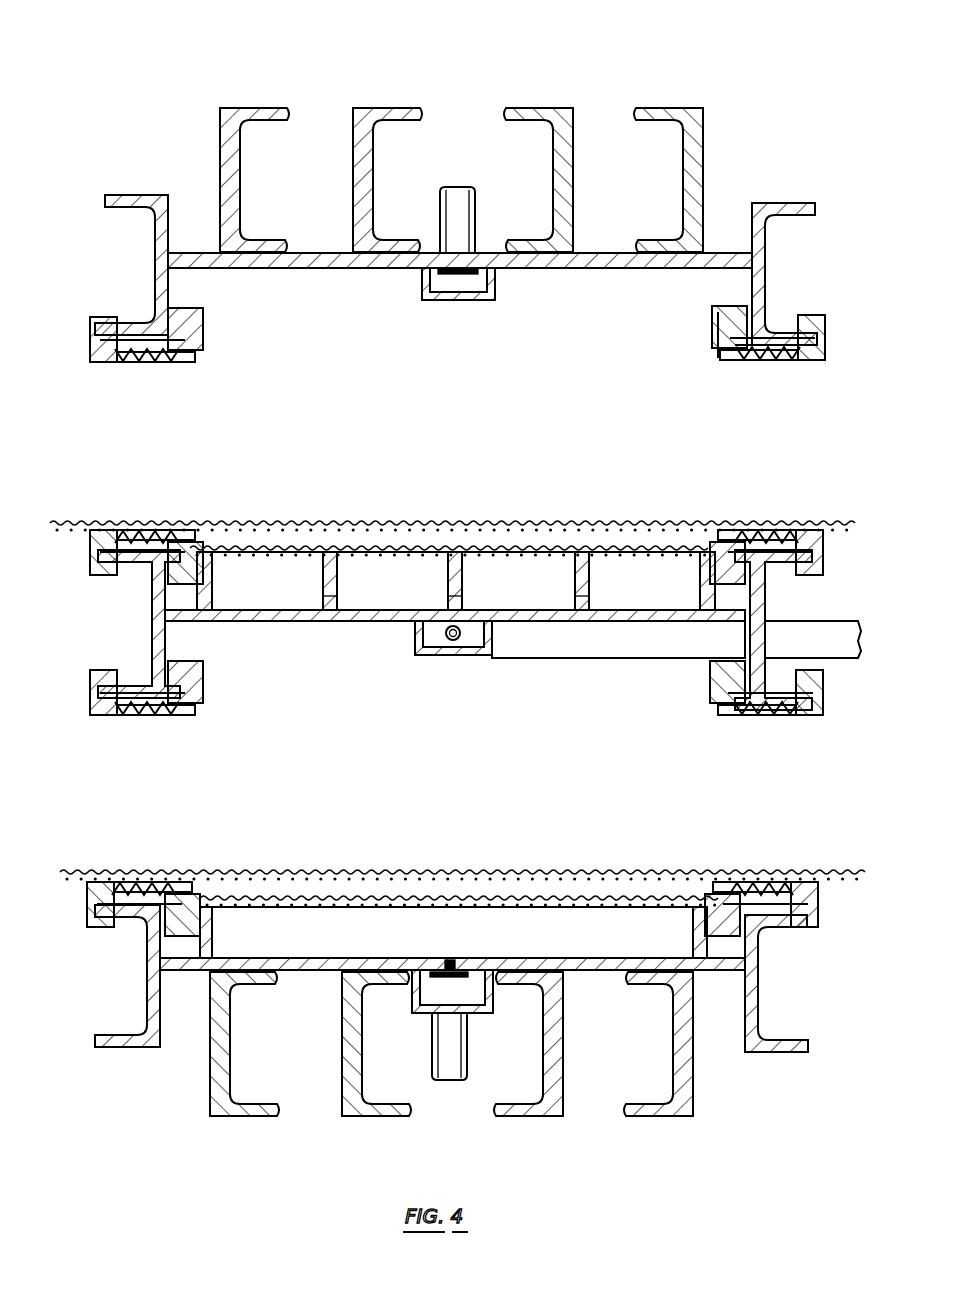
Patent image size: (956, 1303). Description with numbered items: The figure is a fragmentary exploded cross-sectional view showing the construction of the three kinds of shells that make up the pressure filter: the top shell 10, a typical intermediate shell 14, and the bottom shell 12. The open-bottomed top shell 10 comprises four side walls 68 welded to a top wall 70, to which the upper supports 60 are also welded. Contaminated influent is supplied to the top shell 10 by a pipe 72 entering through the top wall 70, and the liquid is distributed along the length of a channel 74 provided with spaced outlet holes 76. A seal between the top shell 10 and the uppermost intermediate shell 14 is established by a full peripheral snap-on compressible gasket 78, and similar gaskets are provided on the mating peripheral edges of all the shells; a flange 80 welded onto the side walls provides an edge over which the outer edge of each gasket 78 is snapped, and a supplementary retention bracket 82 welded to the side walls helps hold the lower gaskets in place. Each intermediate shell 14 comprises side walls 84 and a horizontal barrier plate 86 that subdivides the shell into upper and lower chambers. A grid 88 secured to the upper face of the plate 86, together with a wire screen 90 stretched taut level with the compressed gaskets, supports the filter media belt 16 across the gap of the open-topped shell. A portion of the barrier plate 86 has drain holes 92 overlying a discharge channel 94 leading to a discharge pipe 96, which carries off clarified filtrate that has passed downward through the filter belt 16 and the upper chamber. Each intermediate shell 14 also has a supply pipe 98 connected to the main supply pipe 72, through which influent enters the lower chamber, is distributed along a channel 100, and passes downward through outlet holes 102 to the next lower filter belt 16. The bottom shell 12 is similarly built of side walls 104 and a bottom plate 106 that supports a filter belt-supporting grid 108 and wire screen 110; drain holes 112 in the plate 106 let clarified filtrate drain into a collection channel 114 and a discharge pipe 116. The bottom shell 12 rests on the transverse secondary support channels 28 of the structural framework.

The top shell 10 is at (124, 190).
The upper supports 60 is at (358, 108).
The pipe 72 is at (440, 206).
The side walls 68 is at (760, 203).
The top wall 70 is at (602, 253).
The channel 74 is at (497, 291).
The outlet holes 76 is at (458, 300).
The supplementary retention bracket 82 is at (716, 338).
The flange 80 is at (745, 362).
The snap-on compressible gasket 78 is at (805, 362).
The filter media belt 16 is at (81, 520).
The intermediate shell 14 is at (85, 615).
The wire screen 90 is at (266, 552).
The grid 88 is at (338, 578).
The drain holes 92 is at (680, 610).
The side walls 84 is at (168, 651).
The horizontal barrier plate 86 is at (338, 622).
The channel 100 is at (418, 645).
The outlet holes 102 is at (453, 656).
The supply pipe 98 is at (470, 656).
The discharge channel 94 is at (556, 650).
The discharge pipe 96 is at (840, 655).
The bottom shell 12 is at (70, 1055).
The wire screen 110 is at (393, 895).
The filter belt-supporting grid 108 is at (212, 931).
The drain holes 112 is at (449, 964).
The bottom plate 106 is at (615, 960).
The collection channel 114 is at (485, 1013).
The discharge pipe 116 is at (470, 1060).
The transverse secondary support channels 28 is at (680, 1070).
The side walls 104 is at (760, 1005).